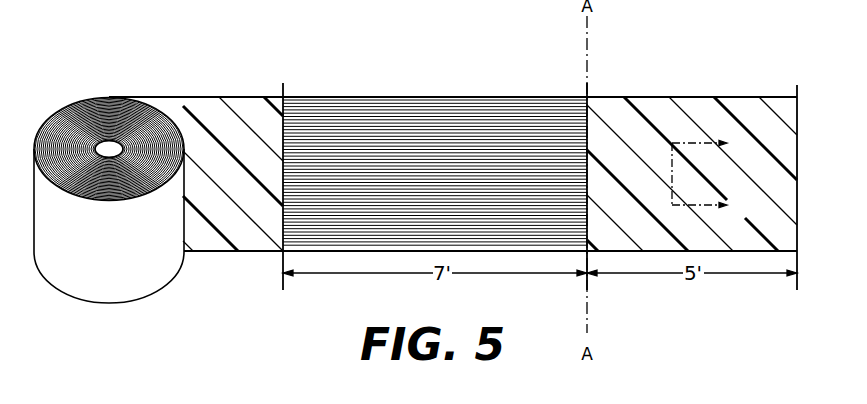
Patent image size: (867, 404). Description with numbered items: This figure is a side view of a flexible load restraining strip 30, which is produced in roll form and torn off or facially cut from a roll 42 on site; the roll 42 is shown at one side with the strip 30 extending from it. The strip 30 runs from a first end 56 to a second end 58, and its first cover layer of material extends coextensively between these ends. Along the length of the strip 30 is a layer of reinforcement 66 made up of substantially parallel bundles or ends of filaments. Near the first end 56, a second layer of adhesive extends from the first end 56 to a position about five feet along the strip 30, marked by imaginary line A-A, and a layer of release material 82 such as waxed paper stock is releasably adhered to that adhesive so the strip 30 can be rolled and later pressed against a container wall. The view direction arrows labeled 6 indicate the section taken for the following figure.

The roll 42 is at (109, 97).
The second end 58 is at (283, 97).
The layer of reinforcement 66 is at (373, 97).
The load restraining strip 30 is at (628, 72).
The first end 56 is at (797, 135).
The layer of release material 82 is at (627, 252).
The section view indicator for FIG. 6 is at (708, 180).